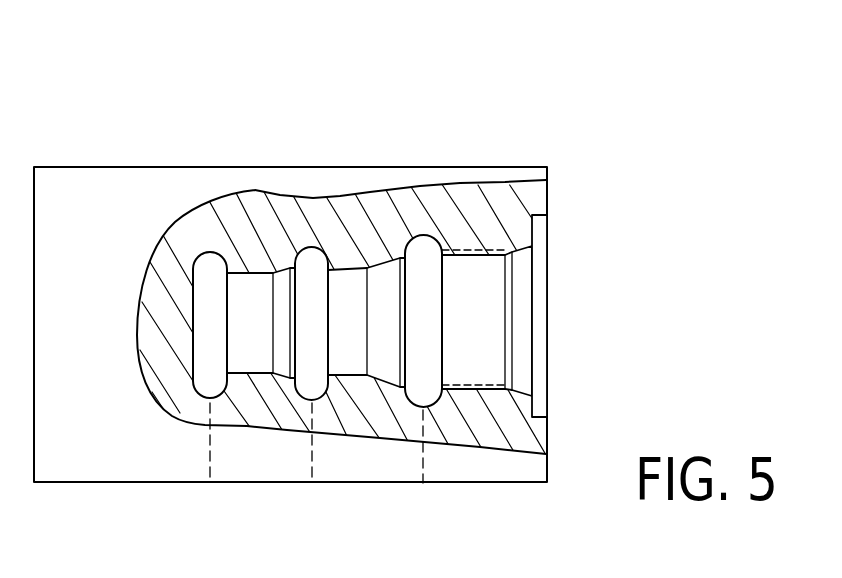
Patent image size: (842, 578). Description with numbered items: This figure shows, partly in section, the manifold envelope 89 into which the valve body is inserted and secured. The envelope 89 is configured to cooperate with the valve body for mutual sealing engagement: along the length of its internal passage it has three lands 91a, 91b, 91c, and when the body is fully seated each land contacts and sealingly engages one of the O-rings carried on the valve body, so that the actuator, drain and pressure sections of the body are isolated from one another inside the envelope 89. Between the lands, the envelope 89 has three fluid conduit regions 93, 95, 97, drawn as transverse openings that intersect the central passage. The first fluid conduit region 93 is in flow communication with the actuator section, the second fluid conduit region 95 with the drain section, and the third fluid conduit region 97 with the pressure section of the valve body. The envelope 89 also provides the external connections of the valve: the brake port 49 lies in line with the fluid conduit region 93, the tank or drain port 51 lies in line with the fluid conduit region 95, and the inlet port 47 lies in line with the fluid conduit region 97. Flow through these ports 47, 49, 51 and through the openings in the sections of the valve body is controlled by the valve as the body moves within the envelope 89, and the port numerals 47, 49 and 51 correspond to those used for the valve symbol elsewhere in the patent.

The envelope 89 is at (102, 167).
The land 91a is at (242, 273).
The land 91b is at (350, 267).
The land 91c is at (508, 240).
The fluid conduit region 93 is at (200, 250).
The fluid conduit region 95 is at (313, 247).
The fluid conduit region 97 is at (428, 235).
The brake port 49 is at (210, 483).
The tank or drain port 51 is at (312, 483).
The inlet port 47 is at (423, 483).